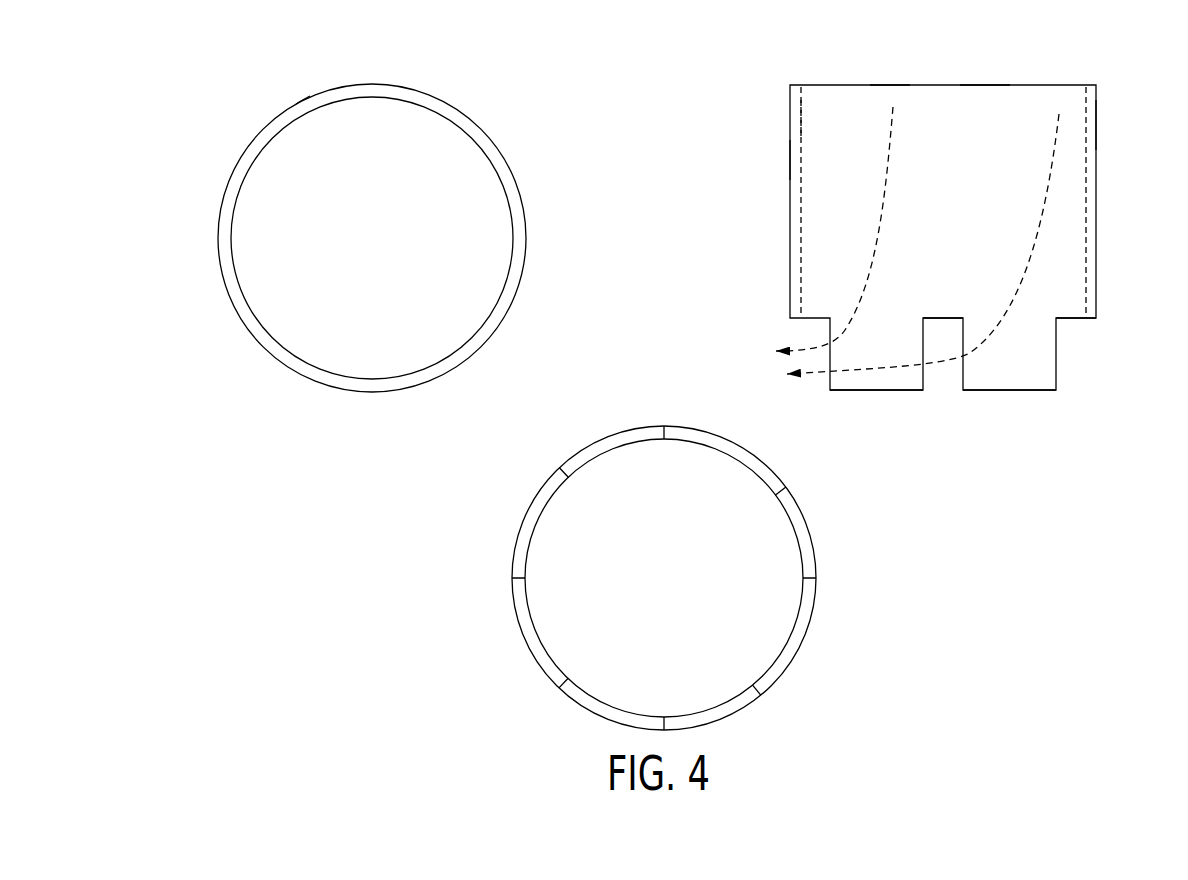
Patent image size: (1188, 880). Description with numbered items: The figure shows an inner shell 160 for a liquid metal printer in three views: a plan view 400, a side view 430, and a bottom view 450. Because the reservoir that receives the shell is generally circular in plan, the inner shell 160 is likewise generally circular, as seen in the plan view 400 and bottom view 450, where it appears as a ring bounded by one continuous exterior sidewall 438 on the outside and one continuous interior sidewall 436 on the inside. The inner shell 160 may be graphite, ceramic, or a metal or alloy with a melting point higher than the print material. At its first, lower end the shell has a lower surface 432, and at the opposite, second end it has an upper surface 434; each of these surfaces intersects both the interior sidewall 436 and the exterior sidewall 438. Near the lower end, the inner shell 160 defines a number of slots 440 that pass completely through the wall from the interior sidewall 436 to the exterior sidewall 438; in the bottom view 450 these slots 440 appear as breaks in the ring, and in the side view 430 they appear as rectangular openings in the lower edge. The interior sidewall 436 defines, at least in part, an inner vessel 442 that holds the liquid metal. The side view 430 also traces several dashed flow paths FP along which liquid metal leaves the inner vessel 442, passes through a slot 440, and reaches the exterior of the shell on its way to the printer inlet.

The plan view 400 is at (195, 137).
The side view 430 is at (742, 125).
The bottom view 450 is at (482, 500).
The inner shell 160 is at (227, 288).
The lower surface 432 is at (900, 392).
The upper surface 434 is at (302, 115).
The interior sidewall 436 is at (297, 355).
The exterior sidewall 438 is at (218, 207).
The slot 440 is at (1078, 340).
The inner vessel 442 is at (445, 155).
The flow path FP is at (889, 183).